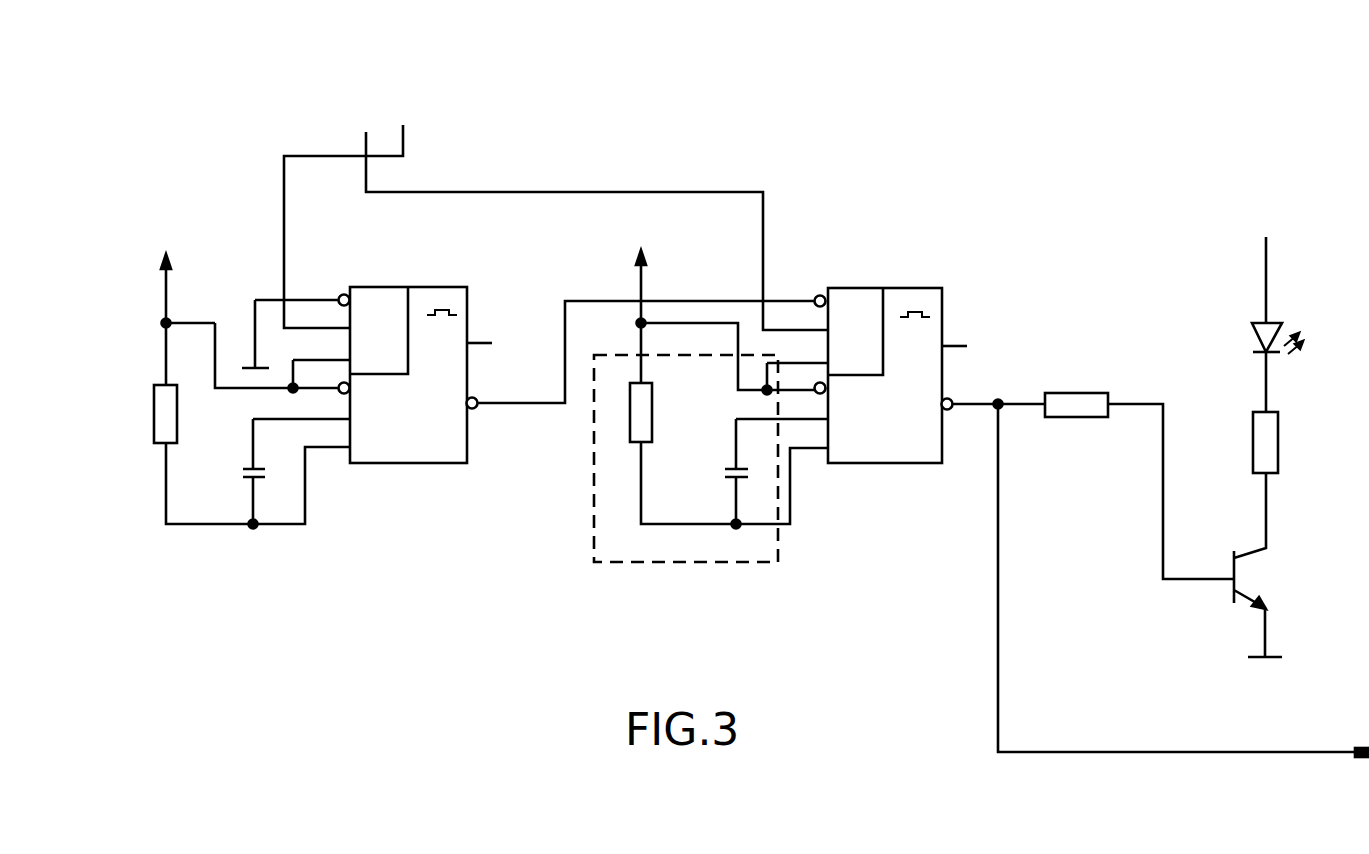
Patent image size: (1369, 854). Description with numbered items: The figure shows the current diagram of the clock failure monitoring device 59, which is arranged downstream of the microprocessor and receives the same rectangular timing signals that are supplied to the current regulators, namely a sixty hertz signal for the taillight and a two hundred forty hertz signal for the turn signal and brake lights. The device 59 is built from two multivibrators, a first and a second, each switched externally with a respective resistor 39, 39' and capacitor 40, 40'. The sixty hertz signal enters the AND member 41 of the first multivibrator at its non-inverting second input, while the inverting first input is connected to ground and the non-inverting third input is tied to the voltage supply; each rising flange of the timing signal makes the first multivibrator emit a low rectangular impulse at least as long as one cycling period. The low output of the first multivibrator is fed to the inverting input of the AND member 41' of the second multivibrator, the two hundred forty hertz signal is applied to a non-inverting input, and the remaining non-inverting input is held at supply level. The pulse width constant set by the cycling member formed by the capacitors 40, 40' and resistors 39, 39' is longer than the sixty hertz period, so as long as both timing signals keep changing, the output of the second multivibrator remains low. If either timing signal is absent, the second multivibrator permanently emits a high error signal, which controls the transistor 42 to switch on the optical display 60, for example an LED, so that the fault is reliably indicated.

The clock failure monitoring device 59 is at (972, 67).
The resistor 39 is at (215, 389).
The capacitor 40 is at (267, 474).
The AND member 41 is at (398, 373).
The resistor 39' is at (680, 387).
The capacitor 40' is at (747, 474).
The AND member 41' is at (874, 375).
The transistor 42 is at (1237, 571).
The optical display 60 is at (1273, 323).